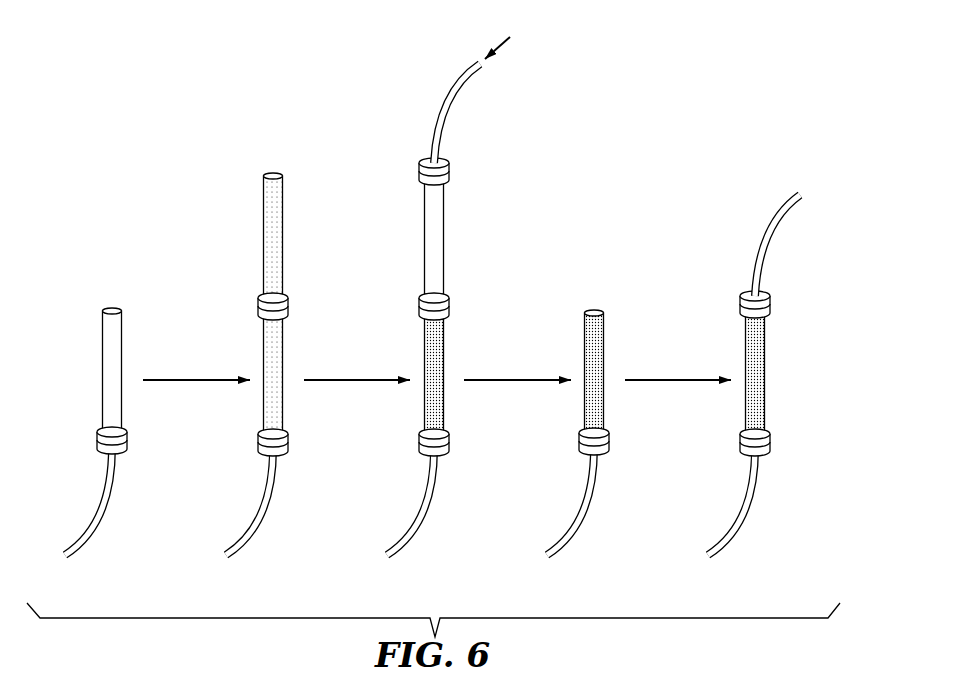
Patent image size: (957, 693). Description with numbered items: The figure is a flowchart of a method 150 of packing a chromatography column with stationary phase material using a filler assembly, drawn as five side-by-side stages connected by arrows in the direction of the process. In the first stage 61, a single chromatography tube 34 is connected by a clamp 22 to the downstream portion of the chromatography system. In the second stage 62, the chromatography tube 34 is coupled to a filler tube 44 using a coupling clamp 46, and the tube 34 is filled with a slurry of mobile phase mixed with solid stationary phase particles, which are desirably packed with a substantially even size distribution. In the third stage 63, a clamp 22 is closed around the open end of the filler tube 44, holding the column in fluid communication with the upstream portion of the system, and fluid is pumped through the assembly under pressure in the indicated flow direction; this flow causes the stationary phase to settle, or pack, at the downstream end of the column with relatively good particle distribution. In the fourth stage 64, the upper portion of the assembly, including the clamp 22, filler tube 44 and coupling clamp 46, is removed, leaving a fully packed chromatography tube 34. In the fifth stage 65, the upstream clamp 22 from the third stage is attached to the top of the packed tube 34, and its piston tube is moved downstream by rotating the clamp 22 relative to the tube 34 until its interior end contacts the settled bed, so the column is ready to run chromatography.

The method of packing a chromatography column 150 is at (90, 62).
The first stage 61 is at (102, 278).
The second stage 62 is at (266, 140).
The third stage 63 is at (420, 140).
The fourth stage 64 is at (585, 278).
The fifth stage 65 is at (742, 278).
The clamp 22 is at (104, 444).
The chromatography tube 34 is at (109, 359).
The filler tube 44 is at (268, 226).
The coupling clamp 46 is at (262, 310).